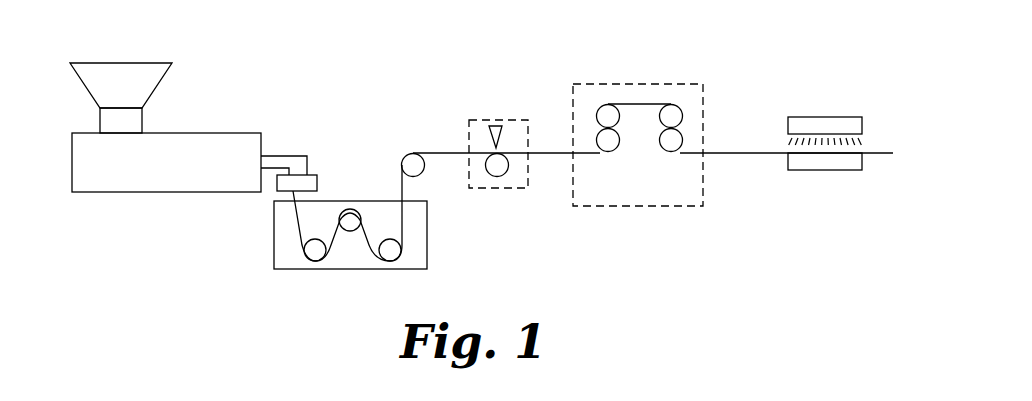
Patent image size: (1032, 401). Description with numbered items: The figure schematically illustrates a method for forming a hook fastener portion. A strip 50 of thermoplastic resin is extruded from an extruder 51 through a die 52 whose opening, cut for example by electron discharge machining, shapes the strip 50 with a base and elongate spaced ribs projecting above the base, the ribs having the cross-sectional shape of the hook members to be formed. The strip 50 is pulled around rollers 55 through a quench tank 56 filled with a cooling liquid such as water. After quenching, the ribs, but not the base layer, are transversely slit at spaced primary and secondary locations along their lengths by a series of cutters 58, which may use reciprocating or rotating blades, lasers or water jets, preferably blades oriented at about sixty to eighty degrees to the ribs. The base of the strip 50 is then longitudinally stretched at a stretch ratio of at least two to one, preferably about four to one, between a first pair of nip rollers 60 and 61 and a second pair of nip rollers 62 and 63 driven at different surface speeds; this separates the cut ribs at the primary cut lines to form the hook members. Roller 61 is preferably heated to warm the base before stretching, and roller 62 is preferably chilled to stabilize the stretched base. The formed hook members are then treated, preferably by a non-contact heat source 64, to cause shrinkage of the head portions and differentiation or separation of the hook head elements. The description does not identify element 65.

The strip 50 is at (296, 222).
The extruder 51 is at (187, 137).
The die 52 is at (291, 192).
The rollers 55 is at (388, 253).
The quench tank 56 is at (418, 246).
The cutters 58 is at (490, 133).
The nip roller 60 is at (664, 149).
The nip roller 61 is at (607, 105).
The nip roller 62 is at (670, 105).
The nip roller 63 is at (677, 140).
The non-contact heat source 64 is at (820, 123).
The lower corona electrode 65 is at (828, 162).